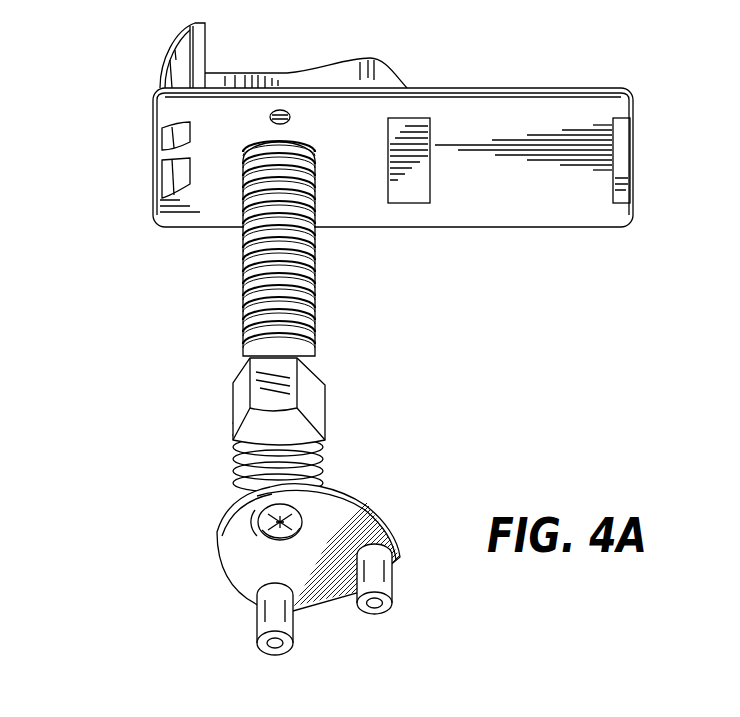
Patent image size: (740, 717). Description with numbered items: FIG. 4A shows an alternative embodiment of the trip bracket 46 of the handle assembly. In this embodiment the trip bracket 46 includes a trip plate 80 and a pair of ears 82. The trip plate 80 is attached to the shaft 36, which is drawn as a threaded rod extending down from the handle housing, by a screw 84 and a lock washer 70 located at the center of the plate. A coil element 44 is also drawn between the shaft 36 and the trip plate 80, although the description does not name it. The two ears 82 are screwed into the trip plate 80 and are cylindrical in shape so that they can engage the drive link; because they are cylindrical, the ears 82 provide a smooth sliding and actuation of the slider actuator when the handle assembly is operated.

The trip bracket 46 is at (123, 320).
The shaft 36 is at (245, 468).
The spring 44 is at (325, 452).
The trip plate 80 is at (220, 506).
The lock washer 70 is at (302, 503).
The screw 84 is at (255, 524).
The ears 82 is at (255, 617).